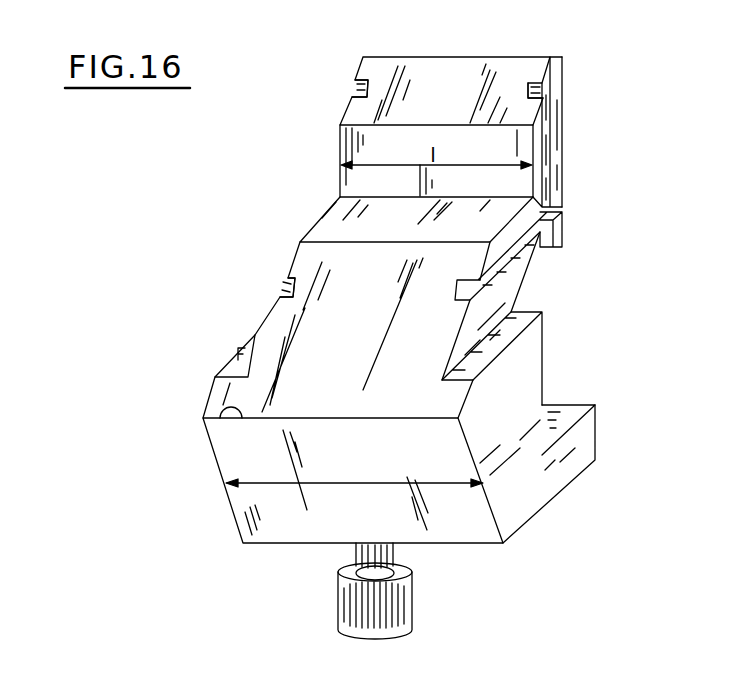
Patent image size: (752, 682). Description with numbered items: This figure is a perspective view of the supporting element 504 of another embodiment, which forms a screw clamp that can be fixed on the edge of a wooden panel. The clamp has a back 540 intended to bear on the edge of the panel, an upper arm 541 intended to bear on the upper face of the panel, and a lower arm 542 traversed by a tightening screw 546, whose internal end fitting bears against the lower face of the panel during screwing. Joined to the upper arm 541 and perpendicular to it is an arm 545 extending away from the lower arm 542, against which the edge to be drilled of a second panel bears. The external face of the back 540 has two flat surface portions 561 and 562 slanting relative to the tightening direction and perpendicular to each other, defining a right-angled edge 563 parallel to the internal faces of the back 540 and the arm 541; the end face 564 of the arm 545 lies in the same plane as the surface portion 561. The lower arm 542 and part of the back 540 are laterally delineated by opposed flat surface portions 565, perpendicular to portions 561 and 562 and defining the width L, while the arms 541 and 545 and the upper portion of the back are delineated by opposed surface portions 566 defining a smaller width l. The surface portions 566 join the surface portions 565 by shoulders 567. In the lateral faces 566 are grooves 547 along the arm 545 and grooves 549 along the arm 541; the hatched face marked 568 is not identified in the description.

The supporting element 504 is at (353, 461).
The back 540 is at (500, 295).
The upper arm 541 is at (340, 208).
The lower arm 542 is at (562, 417).
The arm 545 is at (565, 88).
The tightening screw 546 is at (365, 562).
The grooves 547 is at (352, 88).
The grooves 549 is at (283, 288).
The flat surface portion 561 is at (318, 326).
The flat surface portion 562 is at (228, 437).
The right-angled edge 563 is at (243, 417).
The end face 564 is at (387, 73).
The flat surface portions 565 is at (527, 487).
The surface portions 566 is at (562, 176).
The shoulders 567 is at (240, 352).
The jaw face 568 is at (460, 57).